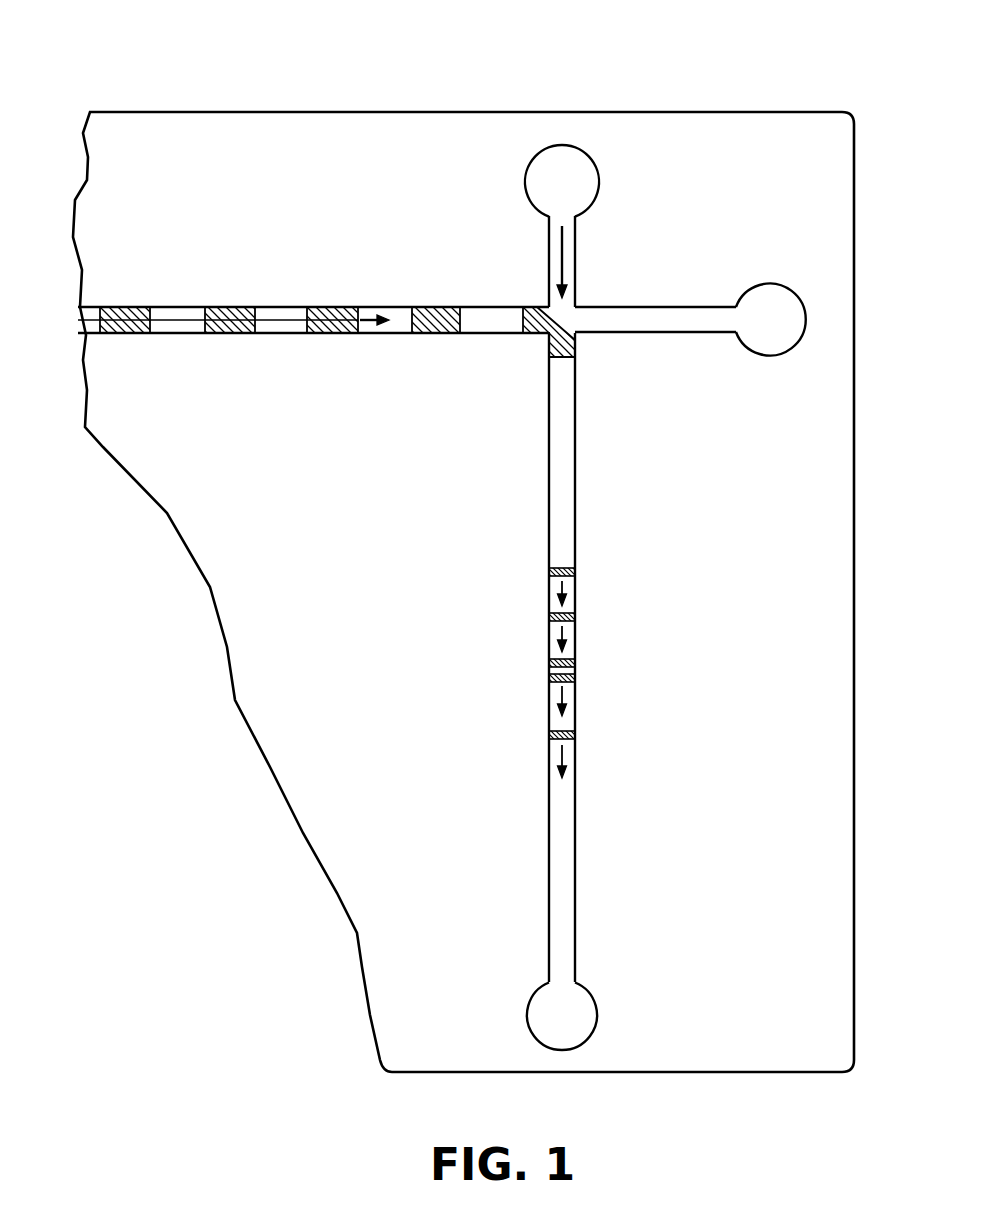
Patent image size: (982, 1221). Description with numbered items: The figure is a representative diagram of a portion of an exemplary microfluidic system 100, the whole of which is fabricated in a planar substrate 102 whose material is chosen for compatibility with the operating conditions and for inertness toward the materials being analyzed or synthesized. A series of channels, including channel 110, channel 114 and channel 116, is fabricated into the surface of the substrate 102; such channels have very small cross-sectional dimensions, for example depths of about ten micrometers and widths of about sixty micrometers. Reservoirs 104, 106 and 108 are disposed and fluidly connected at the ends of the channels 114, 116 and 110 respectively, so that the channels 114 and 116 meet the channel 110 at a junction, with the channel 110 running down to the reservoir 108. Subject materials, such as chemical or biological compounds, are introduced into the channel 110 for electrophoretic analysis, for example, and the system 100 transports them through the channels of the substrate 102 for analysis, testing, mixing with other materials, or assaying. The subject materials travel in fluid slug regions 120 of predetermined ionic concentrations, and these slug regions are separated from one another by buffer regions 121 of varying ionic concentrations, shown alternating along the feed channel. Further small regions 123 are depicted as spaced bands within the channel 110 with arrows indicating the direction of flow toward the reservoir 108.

The microfluidic system 100 is at (470, 62).
The planar substrate 102 is at (812, 1034).
The reservoir 104 is at (587, 182).
The reservoir 106 is at (782, 297).
The reservoir 108 is at (552, 1013).
The channel 110 is at (567, 387).
The channel 114 is at (572, 246).
The channel 116 is at (653, 317).
The fluid slug regions 120 is at (140, 336).
The buffer regions 121 is at (172, 295).
The spacer fluid regions 123 is at (576, 735).